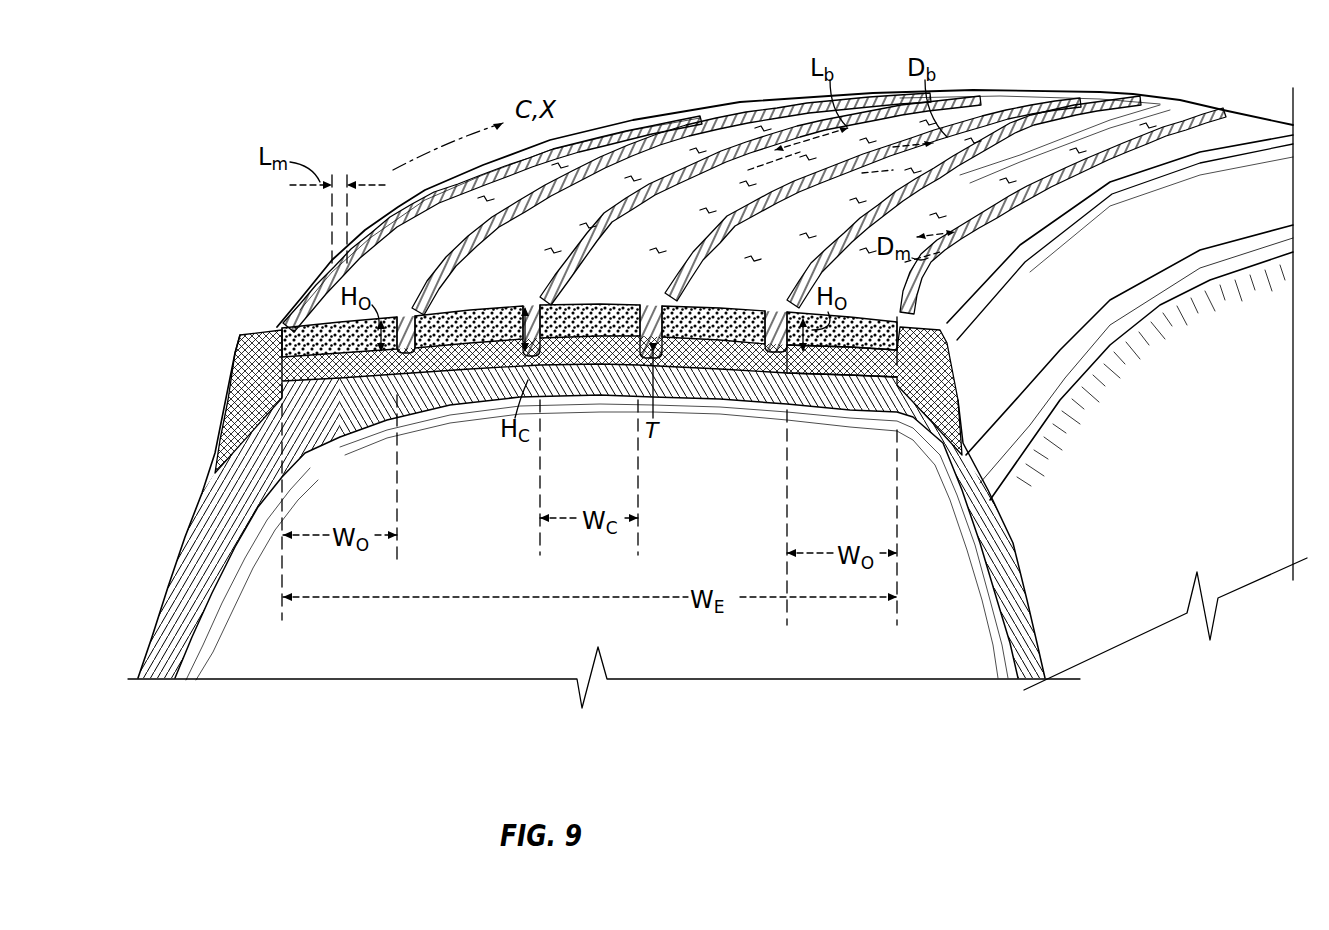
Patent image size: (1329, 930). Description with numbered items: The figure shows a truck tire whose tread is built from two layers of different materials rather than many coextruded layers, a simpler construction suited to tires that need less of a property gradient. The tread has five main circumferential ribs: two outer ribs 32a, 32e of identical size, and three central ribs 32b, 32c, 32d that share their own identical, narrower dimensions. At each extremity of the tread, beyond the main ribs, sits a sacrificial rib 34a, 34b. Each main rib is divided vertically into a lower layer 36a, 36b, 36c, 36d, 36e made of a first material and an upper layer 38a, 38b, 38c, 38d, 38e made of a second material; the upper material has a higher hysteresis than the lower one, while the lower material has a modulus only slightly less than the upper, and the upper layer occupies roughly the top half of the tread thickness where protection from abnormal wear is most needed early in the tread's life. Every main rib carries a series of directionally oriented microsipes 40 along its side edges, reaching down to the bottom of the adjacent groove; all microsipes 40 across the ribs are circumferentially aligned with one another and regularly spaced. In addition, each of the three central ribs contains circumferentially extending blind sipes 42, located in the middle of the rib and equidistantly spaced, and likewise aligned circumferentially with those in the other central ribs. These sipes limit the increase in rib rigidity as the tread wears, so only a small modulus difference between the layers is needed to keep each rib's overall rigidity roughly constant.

The outer main circumferential rib 32a is at (492, 224).
The central main circumferential rib 32b is at (671, 204).
The central main circumferential rib 32c is at (760, 200).
The central main circumferential rib 32d is at (873, 199).
The outer main circumferential rib 32e is at (1006, 205).
The sacrificial rib 34a is at (270, 312).
The sacrificial rib 34b is at (1017, 242).
The lower layer of main rib 36a is at (348, 370).
The lower layer of main rib 36b is at (482, 357).
The lower layer of main rib 36c is at (597, 350).
The lower layer of main rib 36d is at (747, 350).
The lower layer of main rib 36e is at (873, 369).
The upper layer of main rib 38a is at (312, 337).
The upper layer of main rib 38b is at (457, 327).
The upper layer of main rib 38c is at (567, 327).
The upper layer of main rib 38d is at (697, 327).
The upper layer of main rib 38e is at (875, 330).
The directionally oriented microsipes 40 is at (315, 293).
The circumferentially extending blind sipes 42 is at (722, 120).